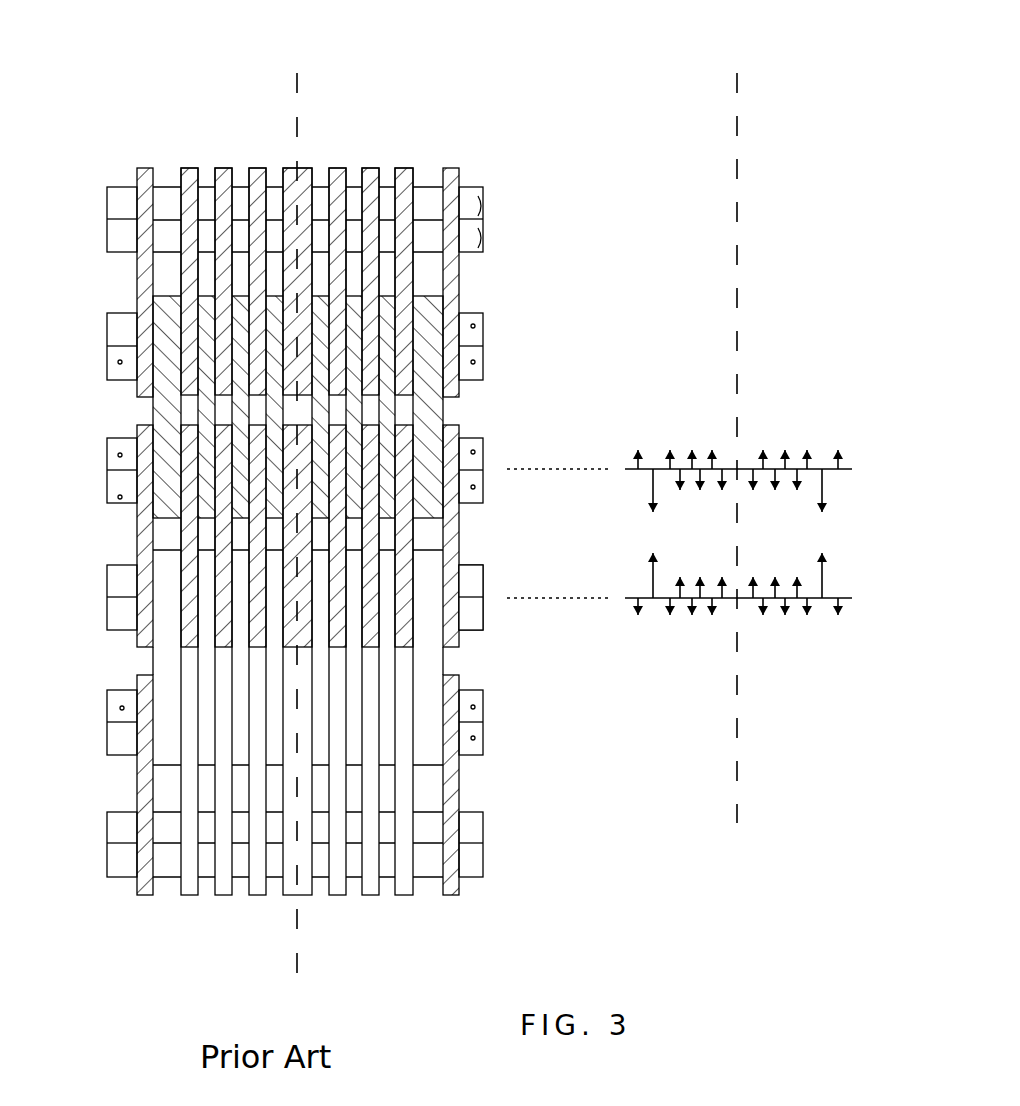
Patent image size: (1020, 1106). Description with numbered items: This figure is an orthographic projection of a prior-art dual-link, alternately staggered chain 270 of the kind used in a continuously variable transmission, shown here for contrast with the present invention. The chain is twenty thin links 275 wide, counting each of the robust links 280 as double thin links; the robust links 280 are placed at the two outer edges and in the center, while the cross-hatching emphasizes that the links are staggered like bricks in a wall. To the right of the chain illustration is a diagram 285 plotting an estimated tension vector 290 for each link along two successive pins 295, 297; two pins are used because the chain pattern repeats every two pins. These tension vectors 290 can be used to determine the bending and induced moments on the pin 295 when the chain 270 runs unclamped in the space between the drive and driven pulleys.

The alternately staggered chain 270 is at (326, 97).
The thin links 275 is at (222, 895).
The robust links 280 is at (312, 895).
The diagram 285 is at (761, 356).
The tension vector 290 is at (809, 455).
The pin 295 is at (483, 453).
The pin 297 is at (483, 575).